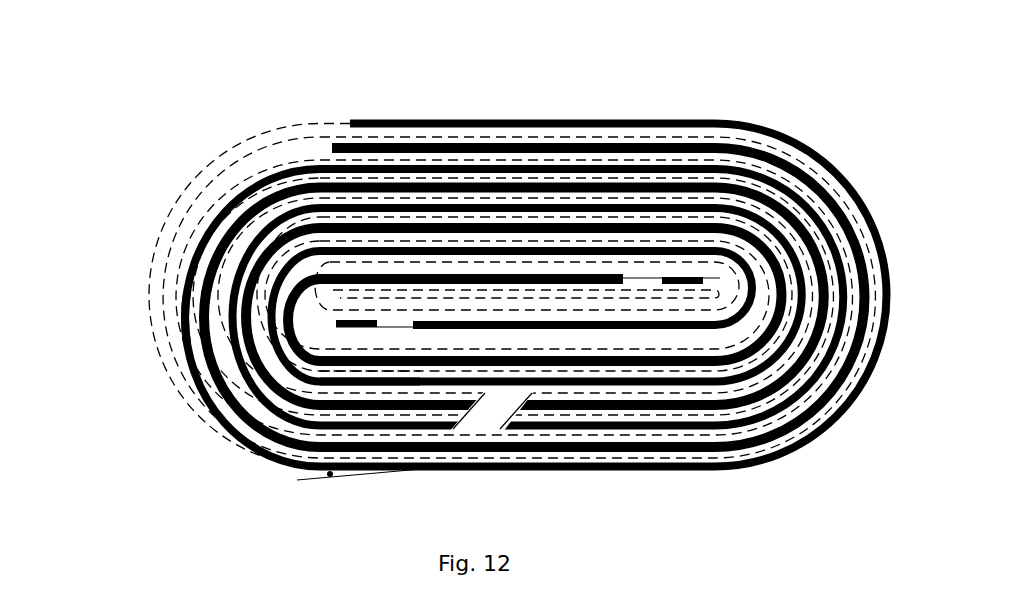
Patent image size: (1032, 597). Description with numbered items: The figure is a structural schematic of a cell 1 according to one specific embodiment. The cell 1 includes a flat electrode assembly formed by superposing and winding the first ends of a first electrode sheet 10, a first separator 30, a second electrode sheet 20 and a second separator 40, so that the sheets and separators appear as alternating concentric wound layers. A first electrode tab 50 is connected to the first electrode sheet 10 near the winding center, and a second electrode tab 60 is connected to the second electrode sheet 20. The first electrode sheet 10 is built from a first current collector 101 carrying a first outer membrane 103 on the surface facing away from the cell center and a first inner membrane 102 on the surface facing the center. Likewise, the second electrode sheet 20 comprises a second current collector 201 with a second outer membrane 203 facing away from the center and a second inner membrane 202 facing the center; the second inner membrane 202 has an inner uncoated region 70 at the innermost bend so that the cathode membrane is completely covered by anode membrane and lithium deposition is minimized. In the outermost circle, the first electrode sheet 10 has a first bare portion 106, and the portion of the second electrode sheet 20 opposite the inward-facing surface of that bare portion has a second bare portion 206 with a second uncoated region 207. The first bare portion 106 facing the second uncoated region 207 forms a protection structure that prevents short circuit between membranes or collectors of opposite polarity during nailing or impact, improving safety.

The cell 1 is at (146, 271).
The first electrode sheet 10 is at (886, 15).
The first current collector 101 is at (608, 273).
The first inner membrane 102 is at (700, 262).
The first outer membrane 103 is at (590, 272).
The first bare portion 106 is at (177, 200).
The second electrode sheet 20 is at (150, 455).
The second current collector 201 is at (352, 385).
The second inner membrane 202 is at (322, 378).
The second outer membrane 203 is at (347, 403).
The second bare portion 206 is at (167, 227).
The second uncoated region 207 is at (177, 323).
The first separator 30 is at (457, 268).
The second separator 40 is at (212, 200).
The first electrode tab 50 is at (692, 278).
The second electrode tab 60 is at (340, 326).
The inner uncoated region 70 is at (750, 293).